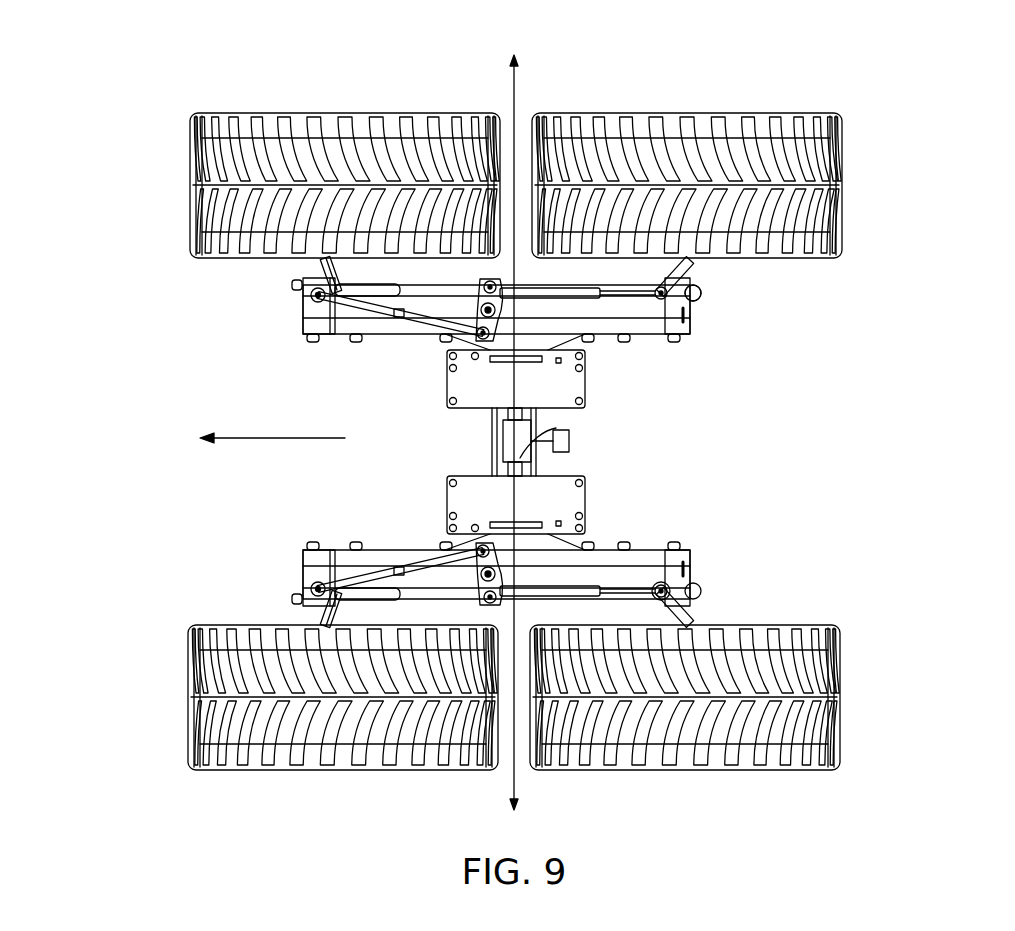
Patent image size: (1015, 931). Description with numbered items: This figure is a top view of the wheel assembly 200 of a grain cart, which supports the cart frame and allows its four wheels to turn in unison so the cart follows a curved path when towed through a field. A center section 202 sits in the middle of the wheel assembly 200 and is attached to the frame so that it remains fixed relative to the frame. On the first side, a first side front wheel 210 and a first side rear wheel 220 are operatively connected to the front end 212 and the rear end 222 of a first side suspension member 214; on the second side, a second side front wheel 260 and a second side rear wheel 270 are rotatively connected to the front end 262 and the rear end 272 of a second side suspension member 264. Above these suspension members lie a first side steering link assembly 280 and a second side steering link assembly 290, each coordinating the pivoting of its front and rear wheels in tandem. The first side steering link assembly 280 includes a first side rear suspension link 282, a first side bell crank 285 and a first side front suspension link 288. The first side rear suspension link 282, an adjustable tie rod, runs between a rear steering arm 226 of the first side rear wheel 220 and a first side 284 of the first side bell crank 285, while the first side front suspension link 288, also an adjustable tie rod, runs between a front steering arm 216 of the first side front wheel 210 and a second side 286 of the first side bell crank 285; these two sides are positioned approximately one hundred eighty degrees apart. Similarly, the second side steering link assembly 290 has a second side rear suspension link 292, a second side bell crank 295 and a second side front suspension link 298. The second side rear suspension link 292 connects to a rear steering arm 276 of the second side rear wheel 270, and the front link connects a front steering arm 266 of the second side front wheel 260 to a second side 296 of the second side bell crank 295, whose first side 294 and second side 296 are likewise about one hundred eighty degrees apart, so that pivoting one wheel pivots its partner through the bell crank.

The wheel assembly 200 is at (882, 321).
The center section 202 is at (457, 499).
The first side front wheel 210 is at (215, 113).
The front end 212 is at (302, 296).
The first side suspension member 214 is at (358, 290).
The front steering arm 216 is at (303, 272).
The first side rear wheel 220 is at (812, 113).
The rear end 222 is at (684, 305).
The rear steering arm 226 is at (688, 272).
The second side front wheel 260 is at (256, 770).
The front end 262 is at (311, 598).
The second side suspension member 264 is at (533, 570).
The front steering arm 266 is at (332, 619).
The second side rear wheel 270 is at (767, 770).
The rear end 272 is at (653, 610).
The rear steering arm 276 is at (680, 615).
The first side steering link assembly 280 is at (400, 349).
The first side rear suspension link 282 is at (593, 288).
The first side 284 is at (486, 280).
The first side bell crank 285 is at (438, 303).
The second side 286 is at (484, 340).
The first side front suspension link 288 is at (323, 258).
The second side steering link assembly 290 is at (732, 576).
The second side rear suspension link 292 is at (598, 592).
The first side 294 is at (485, 604).
The second side bell crank 295 is at (438, 581).
The second side 296 is at (478, 548).
The second side front suspension link 298 is at (372, 612).